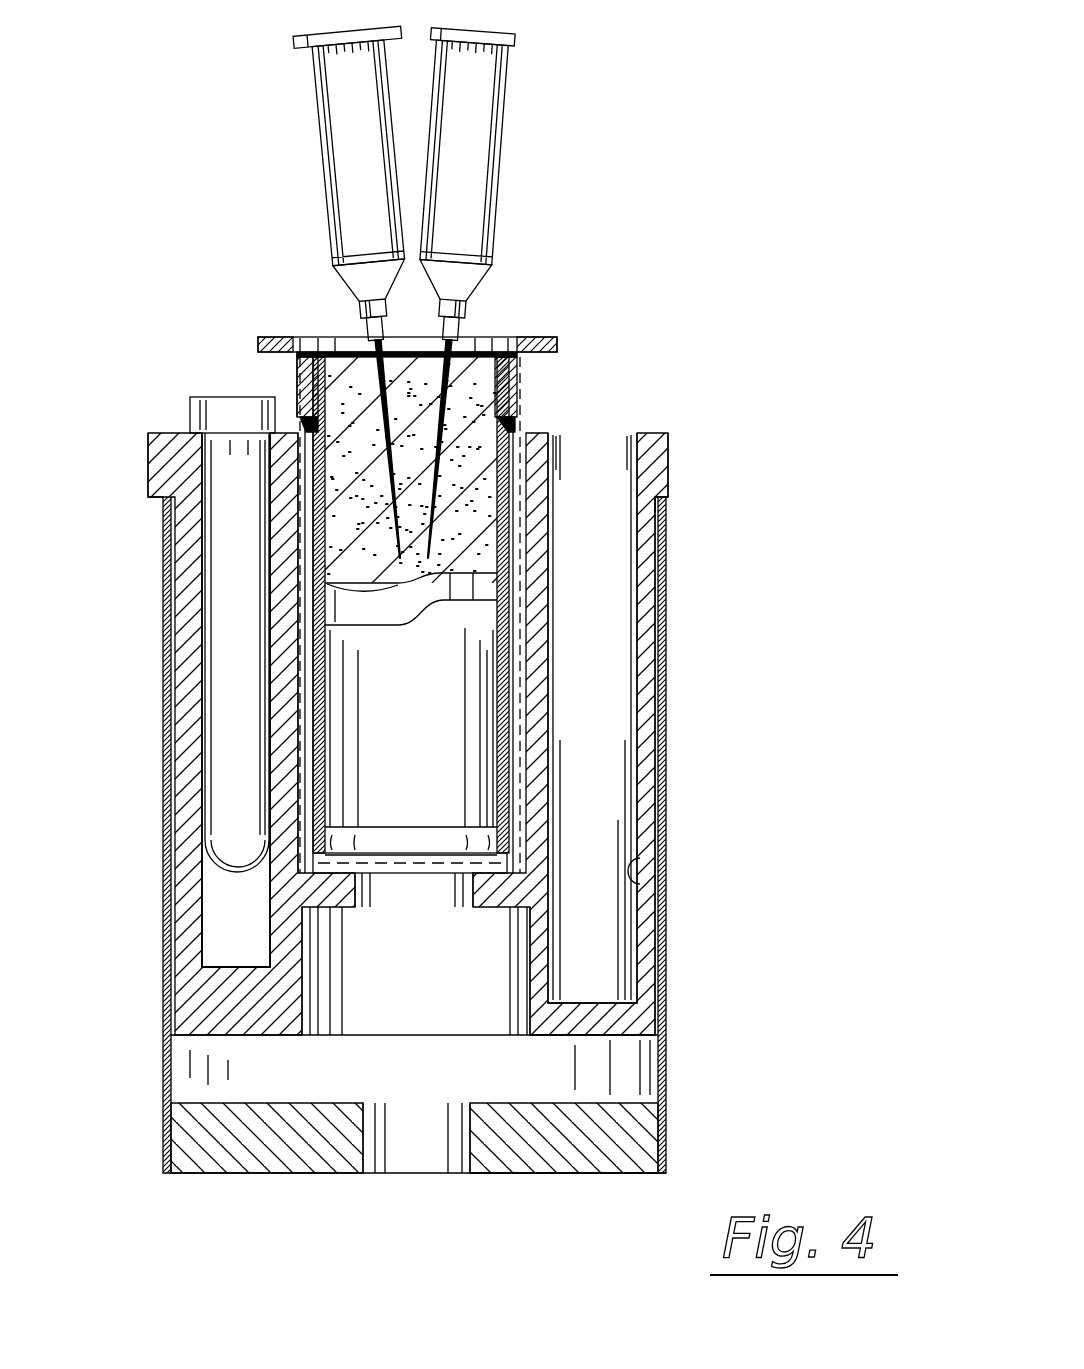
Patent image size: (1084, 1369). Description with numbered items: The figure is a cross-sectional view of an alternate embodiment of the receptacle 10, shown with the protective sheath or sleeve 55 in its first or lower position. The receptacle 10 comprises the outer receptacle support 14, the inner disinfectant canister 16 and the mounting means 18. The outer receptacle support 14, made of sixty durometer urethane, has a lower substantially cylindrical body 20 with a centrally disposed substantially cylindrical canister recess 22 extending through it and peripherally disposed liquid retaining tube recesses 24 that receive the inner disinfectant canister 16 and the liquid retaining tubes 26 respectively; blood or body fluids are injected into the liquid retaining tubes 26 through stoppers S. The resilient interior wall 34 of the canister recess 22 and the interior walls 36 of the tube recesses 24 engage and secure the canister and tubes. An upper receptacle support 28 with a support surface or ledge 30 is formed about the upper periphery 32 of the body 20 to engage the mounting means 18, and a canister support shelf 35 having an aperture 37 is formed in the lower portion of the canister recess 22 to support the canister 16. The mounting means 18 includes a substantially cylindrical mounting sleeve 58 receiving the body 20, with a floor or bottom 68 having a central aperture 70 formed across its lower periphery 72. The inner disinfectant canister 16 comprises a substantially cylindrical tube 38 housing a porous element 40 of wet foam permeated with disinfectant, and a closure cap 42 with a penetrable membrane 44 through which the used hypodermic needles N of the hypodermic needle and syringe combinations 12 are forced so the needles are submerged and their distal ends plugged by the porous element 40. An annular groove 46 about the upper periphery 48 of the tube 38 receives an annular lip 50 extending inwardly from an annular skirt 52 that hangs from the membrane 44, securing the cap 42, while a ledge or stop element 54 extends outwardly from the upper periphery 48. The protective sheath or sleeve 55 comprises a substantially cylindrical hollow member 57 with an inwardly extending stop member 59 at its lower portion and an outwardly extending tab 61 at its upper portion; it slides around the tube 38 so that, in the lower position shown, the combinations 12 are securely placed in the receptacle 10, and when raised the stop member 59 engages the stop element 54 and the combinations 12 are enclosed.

The receptacle 10 is at (757, 796).
The hypodermic needle and syringe combination 12 is at (288, 220).
The outer receptacle support 14 is at (752, 618).
The inner disinfectant canister 16 is at (637, 340).
The mounting means 18 is at (724, 1066).
The lower substantially cylindrical body 20 is at (170, 617).
The substantially cylindrical canister recess 22 is at (296, 645).
The liquid retaining tube recess 24 is at (223, 919).
The liquid retaining tube 26 is at (220, 730).
The upper receptacle support 28 is at (668, 462).
The support surface or ledge 30 is at (665, 498).
The upper periphery 32 is at (640, 545).
The interior wall of canister recess 34 is at (507, 515).
The canister support shelf 35 is at (337, 912).
The interior wall of liquid tube recess 36 is at (640, 862).
The aperture 37 is at (424, 905).
The substantially cylindrical tube 38 is at (505, 587).
The porous element 40 is at (455, 555).
The closure cap 42 is at (520, 357).
The penetrable membrane 44 is at (482, 338).
The annular groove 46 is at (515, 397).
The upper periphery 48 is at (523, 478).
The annular lip 50 is at (296, 396).
The annular skirt 52 is at (295, 360).
The ledge or stop element 54 is at (520, 420).
The protective sheath or sleeve 55 is at (287, 554).
The substantially cylindrical hollow member 57 is at (293, 530).
The mounting sleeve 58 is at (668, 1008).
The stop member 59 is at (300, 870).
The tab 61 is at (293, 337).
The floor or bottom 68 is at (588, 1173).
The aperture 70 is at (425, 1170).
The lower periphery 72 is at (668, 1112).
The stopper S is at (190, 401).
The hypodermic needle N is at (382, 437).